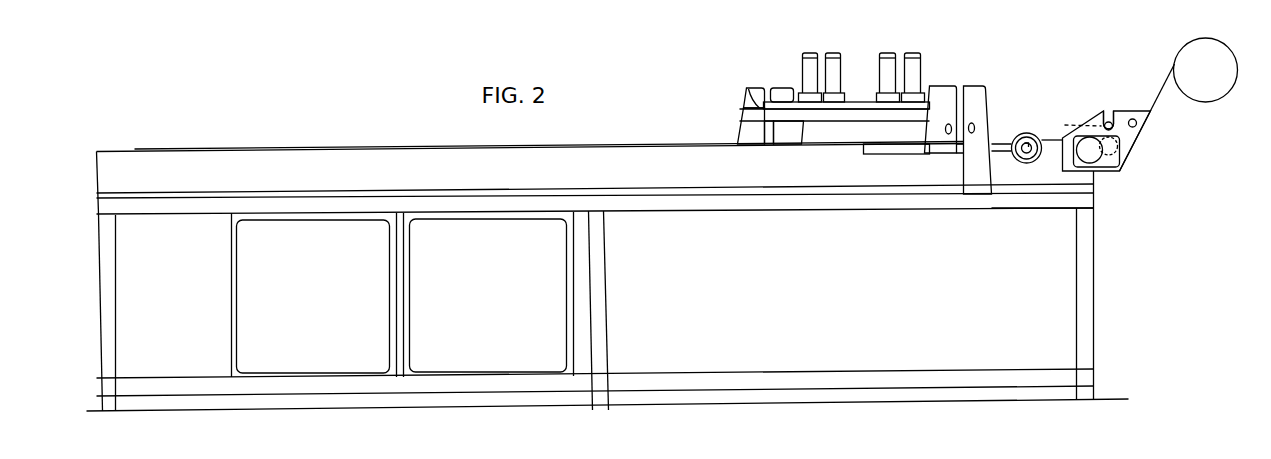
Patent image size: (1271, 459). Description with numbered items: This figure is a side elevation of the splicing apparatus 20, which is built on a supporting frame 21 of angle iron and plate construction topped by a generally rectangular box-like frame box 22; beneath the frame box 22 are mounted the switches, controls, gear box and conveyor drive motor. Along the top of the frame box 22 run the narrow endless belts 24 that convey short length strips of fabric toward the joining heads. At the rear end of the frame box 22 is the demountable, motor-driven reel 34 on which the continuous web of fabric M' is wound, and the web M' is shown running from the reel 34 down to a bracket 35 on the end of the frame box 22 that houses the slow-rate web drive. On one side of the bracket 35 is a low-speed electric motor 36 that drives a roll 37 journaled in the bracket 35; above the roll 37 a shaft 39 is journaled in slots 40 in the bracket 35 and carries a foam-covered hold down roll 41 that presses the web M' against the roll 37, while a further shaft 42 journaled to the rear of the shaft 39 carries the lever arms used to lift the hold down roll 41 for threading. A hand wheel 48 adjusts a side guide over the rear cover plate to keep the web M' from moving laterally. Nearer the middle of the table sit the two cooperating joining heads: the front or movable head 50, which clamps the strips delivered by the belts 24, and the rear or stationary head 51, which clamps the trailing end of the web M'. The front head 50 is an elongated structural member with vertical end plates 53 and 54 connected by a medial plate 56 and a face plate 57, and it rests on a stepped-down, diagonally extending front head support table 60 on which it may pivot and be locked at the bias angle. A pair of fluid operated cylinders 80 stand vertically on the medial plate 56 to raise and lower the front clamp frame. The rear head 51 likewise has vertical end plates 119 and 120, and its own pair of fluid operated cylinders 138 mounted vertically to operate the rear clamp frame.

The apparatus 20 is at (246, 140).
The supporting frame 21 is at (109, 324).
The frame box 22 is at (705, 177).
The endless belts 24 is at (383, 147).
The reel 34 is at (1212, 43).
The bracket 35 is at (1122, 155).
The electric motor 36 is at (1093, 155).
The roll 37 is at (1118, 145).
The shaft 39 is at (1105, 124).
The slots 40 is at (1107, 108).
The hold down roll 41 is at (1074, 125).
The shaft 42 is at (1138, 122).
The hand wheel 48 is at (1040, 151).
The front head 50 is at (740, 132).
The rear head 51 is at (790, 132).
The end plate 53 is at (937, 142).
The end plate 54 is at (757, 88).
The medial plate 56 is at (743, 92).
The face plate 57 is at (763, 117).
The front head support table 60 is at (883, 153).
The fluid operated cylinders 80 is at (805, 63).
The end plate 119 is at (778, 135).
The end plate 120 is at (980, 120).
The fluid operated cylinders 138 is at (835, 55).
The continuous web of fabric M' is at (1147, 111).